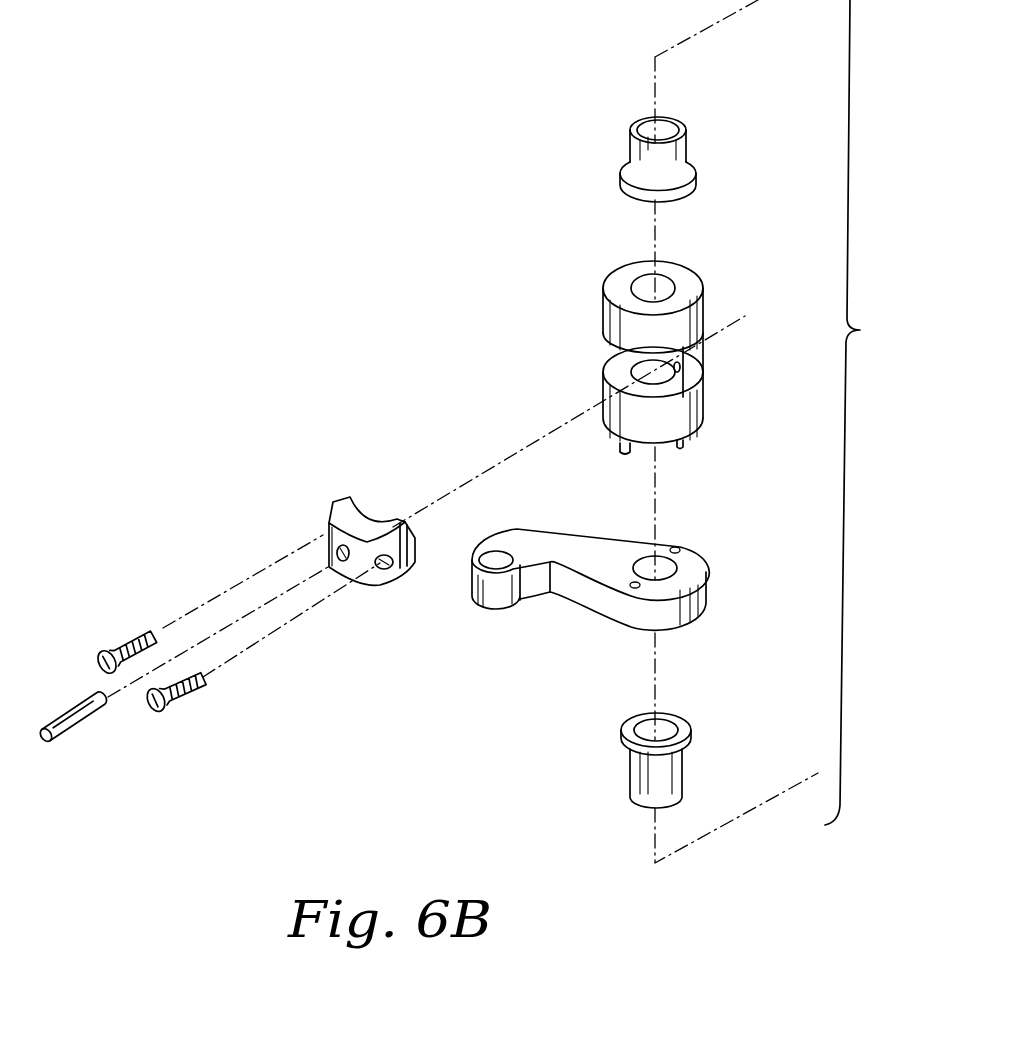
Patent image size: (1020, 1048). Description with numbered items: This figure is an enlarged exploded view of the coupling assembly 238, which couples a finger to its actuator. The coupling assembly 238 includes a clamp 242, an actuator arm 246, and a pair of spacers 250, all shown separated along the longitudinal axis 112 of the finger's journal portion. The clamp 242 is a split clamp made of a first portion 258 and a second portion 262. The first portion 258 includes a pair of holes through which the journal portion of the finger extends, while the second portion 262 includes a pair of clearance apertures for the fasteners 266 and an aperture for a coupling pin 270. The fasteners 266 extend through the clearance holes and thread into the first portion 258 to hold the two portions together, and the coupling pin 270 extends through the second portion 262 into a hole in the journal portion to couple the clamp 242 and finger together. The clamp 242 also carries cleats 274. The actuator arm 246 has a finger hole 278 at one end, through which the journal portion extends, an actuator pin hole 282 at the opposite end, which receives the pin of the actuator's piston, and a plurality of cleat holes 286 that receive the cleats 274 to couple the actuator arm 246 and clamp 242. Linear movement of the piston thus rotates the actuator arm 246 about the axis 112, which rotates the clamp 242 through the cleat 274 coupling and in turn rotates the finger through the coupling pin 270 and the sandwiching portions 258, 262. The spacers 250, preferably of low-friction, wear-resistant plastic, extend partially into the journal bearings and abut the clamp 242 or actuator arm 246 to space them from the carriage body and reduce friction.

The longitudinal axis 112 is at (660, 690).
The coupling assembly 238 is at (882, 412).
The clamp 242 is at (526, 402).
The actuator arm 246 is at (605, 580).
The spacers 250 is at (640, 152).
The first portion 258 is at (793, 238).
The second portion 262 is at (345, 505).
The fasteners 266 is at (152, 578).
The coupling pin 270 is at (88, 723).
The cleats 274 is at (680, 443).
The finger hole 278 is at (661, 572).
The actuator pin hole 282 is at (495, 560).
The cleat holes 286 is at (705, 587).